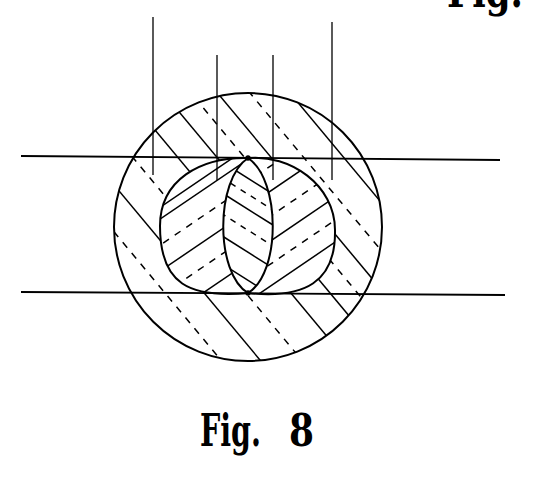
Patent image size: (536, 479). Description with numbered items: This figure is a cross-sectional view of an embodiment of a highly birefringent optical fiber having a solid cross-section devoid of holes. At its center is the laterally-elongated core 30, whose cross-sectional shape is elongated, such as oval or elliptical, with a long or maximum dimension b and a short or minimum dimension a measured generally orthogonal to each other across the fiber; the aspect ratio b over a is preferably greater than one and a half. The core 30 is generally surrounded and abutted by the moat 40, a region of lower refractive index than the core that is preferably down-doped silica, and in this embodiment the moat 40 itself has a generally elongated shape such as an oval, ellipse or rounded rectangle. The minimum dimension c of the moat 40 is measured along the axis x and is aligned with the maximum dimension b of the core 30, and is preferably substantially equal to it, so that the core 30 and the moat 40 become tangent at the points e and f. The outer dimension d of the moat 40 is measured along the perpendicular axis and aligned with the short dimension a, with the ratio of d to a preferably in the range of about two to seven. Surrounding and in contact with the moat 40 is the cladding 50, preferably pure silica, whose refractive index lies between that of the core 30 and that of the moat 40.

The centermost laterally-elongated core 30 is at (312, 240).
The moat 40 is at (297, 182).
The cladding 50 is at (297, 325).
The tangent point e is at (248, 158).
The tangent point f is at (248, 293).
The minimum dimension of the core a is at (315, 69).
The maximum dimension of the core b is at (57, 157).
The minimum dimension of the moat c is at (456, 160).
The outer dimension of the moat d is at (332, 32).
The axis X—X x is at (252, 407).